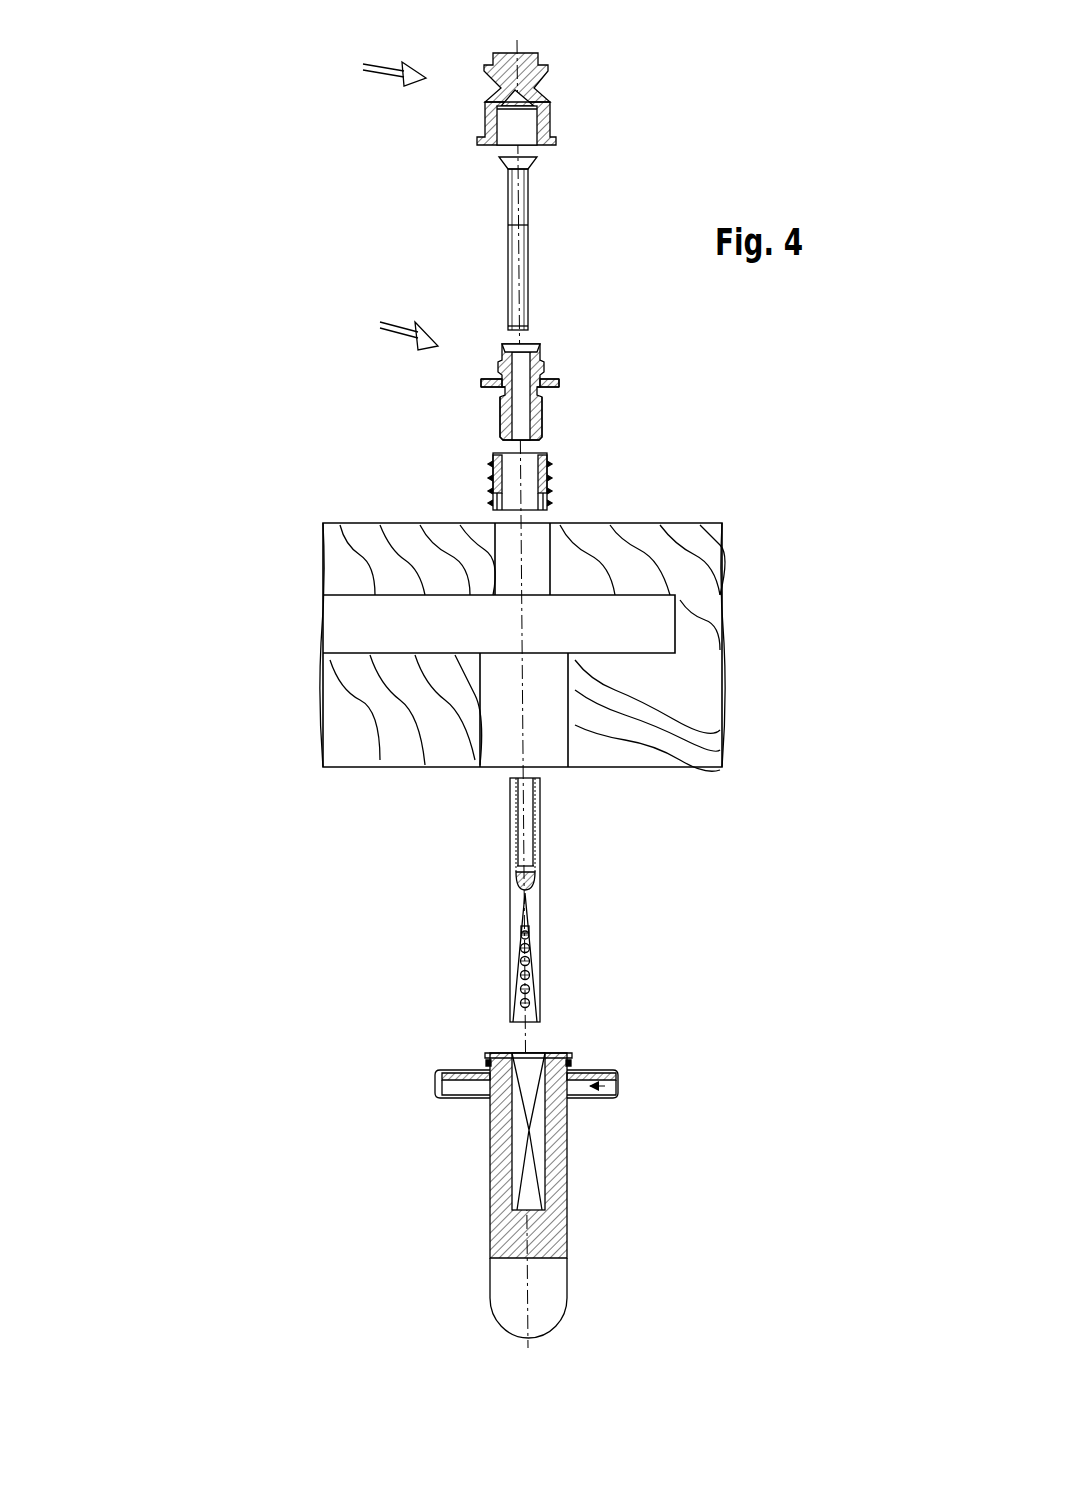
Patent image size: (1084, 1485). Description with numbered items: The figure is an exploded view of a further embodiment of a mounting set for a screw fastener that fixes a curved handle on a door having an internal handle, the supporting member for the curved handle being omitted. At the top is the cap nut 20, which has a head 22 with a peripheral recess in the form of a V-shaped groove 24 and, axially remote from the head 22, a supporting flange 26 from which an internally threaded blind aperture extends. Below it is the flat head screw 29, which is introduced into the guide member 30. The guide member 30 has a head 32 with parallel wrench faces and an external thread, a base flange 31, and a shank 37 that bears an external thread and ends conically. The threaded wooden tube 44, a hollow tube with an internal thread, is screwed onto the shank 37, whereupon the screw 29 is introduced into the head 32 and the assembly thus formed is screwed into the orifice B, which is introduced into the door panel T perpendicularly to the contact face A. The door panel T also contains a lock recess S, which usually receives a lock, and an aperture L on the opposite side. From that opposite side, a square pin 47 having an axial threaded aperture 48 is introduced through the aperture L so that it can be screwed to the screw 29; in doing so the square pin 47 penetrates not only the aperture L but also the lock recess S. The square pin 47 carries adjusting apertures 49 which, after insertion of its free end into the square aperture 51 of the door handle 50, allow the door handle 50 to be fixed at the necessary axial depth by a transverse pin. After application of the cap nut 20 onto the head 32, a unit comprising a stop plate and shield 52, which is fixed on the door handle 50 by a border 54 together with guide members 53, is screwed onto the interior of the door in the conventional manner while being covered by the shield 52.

The cap nut 20 is at (378, 69).
The head 22 is at (570, 81).
The V-shaped groove 24 is at (537, 86).
The supporting flange 26 is at (553, 141).
The flat head screw 29 is at (508, 212).
The guide member 30 is at (394, 330).
The base flange 31 is at (559, 382).
The head 32 is at (572, 378).
The shank 37 is at (542, 416).
The threaded wooden tube 44 is at (472, 465).
The contact face A is at (357, 523).
The orifice B is at (545, 551).
The lock recess S is at (375, 632).
The door panel T is at (365, 738).
The aperture L is at (570, 735).
The square pin 47 is at (533, 900).
The threaded aperture 48 is at (530, 832).
The adjusting apertures 49 is at (529, 1001).
The door handle 50 is at (567, 1258).
The square aperture 51 is at (512, 1143).
The stop plate and shield 52 is at (613, 1097).
The guide members 53 is at (625, 1071).
The border 54 is at (490, 1060).